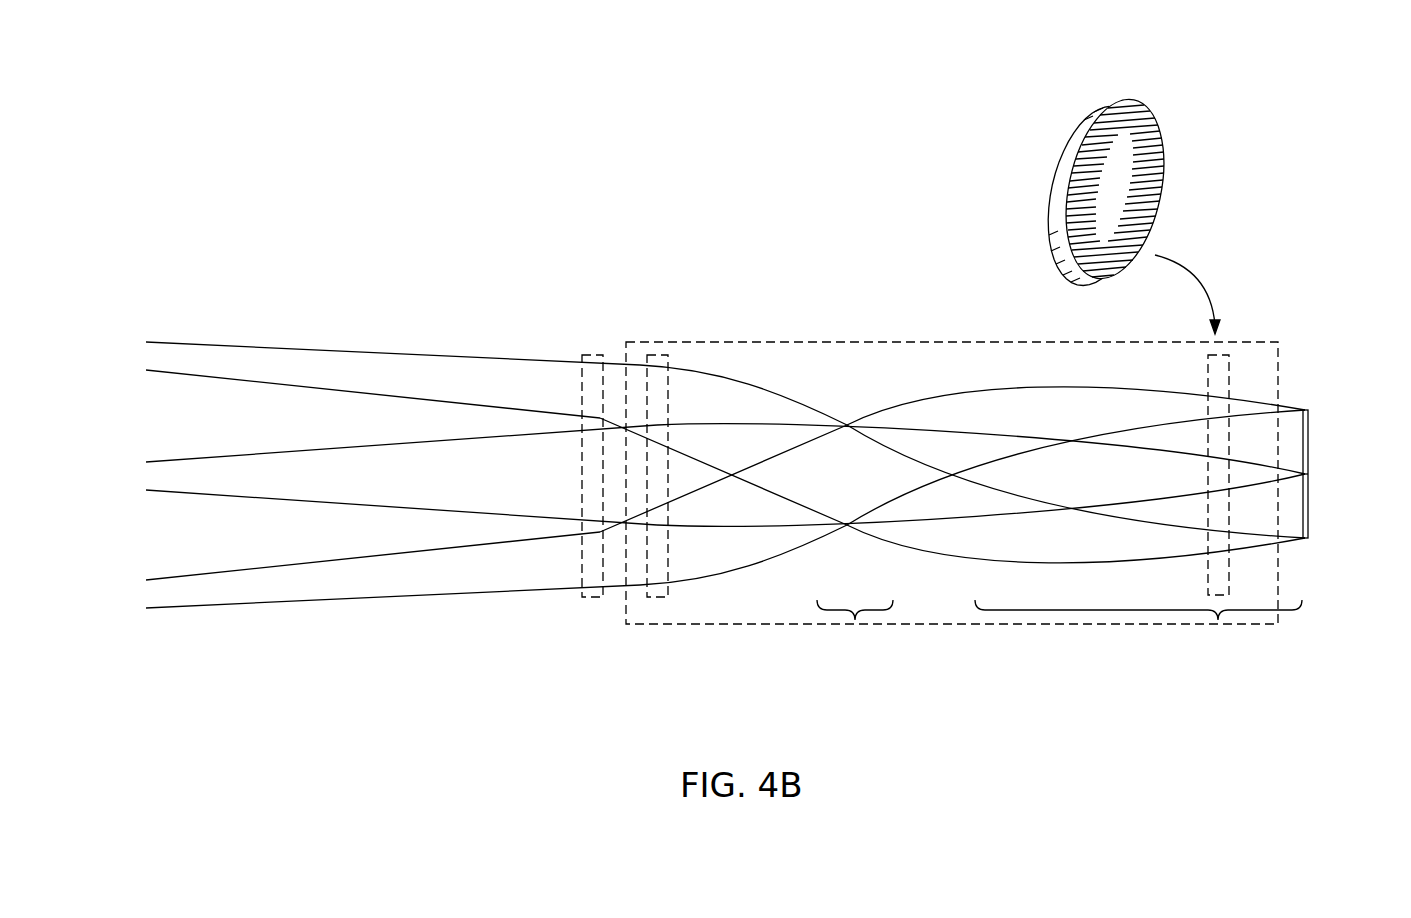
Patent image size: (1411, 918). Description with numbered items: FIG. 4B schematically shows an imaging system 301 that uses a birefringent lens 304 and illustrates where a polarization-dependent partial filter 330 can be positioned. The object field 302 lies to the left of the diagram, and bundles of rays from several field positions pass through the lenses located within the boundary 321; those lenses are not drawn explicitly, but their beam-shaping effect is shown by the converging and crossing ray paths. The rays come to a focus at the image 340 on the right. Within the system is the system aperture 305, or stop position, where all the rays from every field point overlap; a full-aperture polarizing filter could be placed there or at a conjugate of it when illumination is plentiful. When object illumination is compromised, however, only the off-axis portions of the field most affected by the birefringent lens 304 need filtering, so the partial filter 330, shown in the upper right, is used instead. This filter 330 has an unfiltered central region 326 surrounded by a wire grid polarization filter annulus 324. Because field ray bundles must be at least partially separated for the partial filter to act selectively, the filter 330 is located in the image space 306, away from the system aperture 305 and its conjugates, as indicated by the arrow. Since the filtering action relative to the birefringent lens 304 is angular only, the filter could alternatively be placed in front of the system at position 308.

The optical system 301 is at (728, 303).
The object field 302 is at (168, 648).
The birefringent lens 304 is at (663, 597).
The system aperture 305 is at (855, 620).
The image space 306 is at (1218, 620).
The position in front of the system 308 is at (595, 597).
The optical assembly housing 321 is at (715, 625).
The wire grid polarization filter annulus 324 is at (1140, 133).
The unfiltered central region 326 is at (1127, 188).
The polarization-dependent partial filter 330 is at (1072, 127).
The image 340 is at (1308, 500).